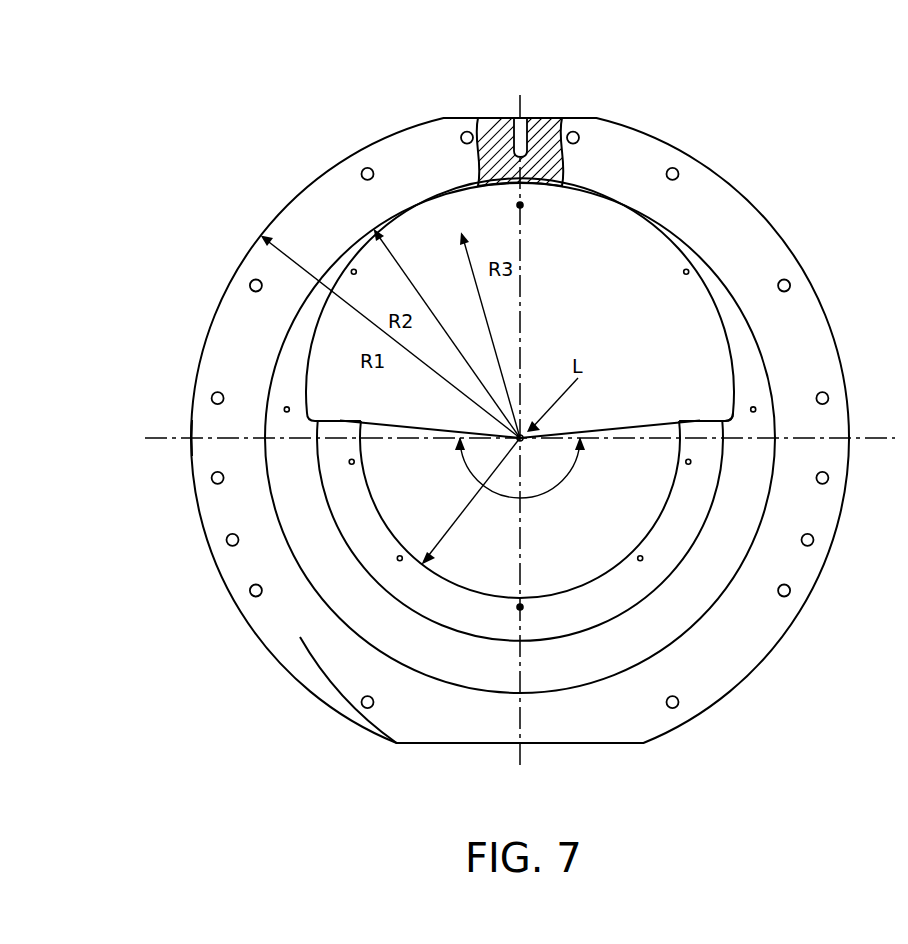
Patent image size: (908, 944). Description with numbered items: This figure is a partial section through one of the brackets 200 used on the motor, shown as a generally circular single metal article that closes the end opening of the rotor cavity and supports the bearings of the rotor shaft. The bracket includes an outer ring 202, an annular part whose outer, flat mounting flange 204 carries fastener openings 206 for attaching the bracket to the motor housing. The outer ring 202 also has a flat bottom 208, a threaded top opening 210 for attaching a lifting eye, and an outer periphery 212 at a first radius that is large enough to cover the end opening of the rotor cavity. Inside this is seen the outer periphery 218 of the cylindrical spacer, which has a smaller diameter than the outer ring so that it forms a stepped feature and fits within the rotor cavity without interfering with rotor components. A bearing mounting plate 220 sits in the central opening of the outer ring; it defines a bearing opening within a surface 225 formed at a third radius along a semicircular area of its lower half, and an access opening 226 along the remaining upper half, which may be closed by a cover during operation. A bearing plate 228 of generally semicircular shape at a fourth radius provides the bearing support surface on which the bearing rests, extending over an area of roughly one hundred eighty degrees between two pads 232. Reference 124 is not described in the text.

The bracket 200 is at (238, 142).
The outer ring 202 is at (755, 226).
The mounting flange 204 is at (300, 637).
The fastener openings 206 is at (807, 280).
The flat bottom 208 is at (427, 745).
The threaded top opening 210 is at (521, 117).
The outer periphery 212 is at (192, 407).
The outer periphery of the cylindrical spacer 218 is at (684, 233).
The bearing mounting plate 220 is at (603, 213).
The surface 225 is at (666, 277).
The access opening 226 is at (693, 592).
The bearing plate 228 is at (565, 592).
The pads 232 is at (718, 411).
The radial dimension 124 is at (467, 508).